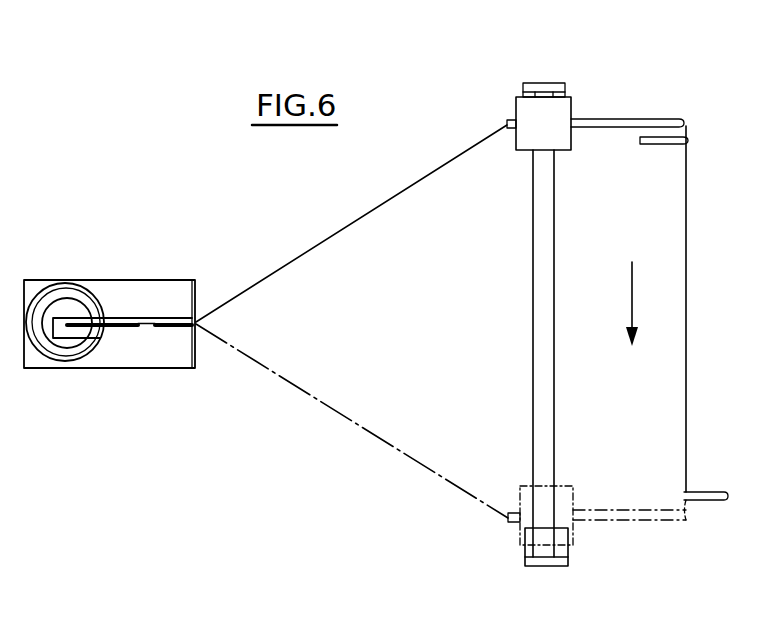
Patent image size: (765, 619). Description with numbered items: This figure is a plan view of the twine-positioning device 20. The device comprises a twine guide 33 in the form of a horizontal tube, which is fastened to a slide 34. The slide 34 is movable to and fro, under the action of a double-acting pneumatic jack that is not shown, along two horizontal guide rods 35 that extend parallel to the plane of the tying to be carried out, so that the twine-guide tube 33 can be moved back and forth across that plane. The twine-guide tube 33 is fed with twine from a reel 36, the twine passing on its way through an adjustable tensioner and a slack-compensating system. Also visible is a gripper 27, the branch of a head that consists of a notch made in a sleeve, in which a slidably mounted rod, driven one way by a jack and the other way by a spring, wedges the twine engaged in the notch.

The twine-positioning device 20 is at (534, 74).
The gripper 27 is at (655, 157).
The twine guide 33 is at (650, 121).
The slide 34 is at (556, 110).
The horizontal guide rods 35 is at (545, 279).
The reel 36 is at (62, 296).